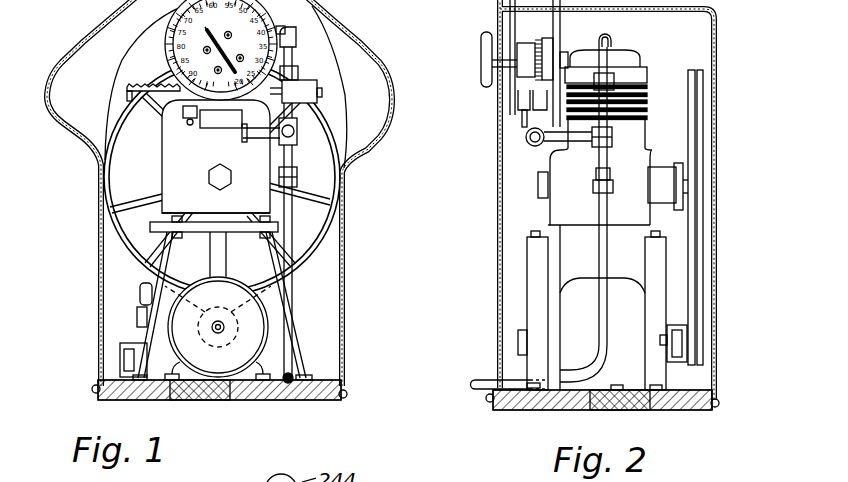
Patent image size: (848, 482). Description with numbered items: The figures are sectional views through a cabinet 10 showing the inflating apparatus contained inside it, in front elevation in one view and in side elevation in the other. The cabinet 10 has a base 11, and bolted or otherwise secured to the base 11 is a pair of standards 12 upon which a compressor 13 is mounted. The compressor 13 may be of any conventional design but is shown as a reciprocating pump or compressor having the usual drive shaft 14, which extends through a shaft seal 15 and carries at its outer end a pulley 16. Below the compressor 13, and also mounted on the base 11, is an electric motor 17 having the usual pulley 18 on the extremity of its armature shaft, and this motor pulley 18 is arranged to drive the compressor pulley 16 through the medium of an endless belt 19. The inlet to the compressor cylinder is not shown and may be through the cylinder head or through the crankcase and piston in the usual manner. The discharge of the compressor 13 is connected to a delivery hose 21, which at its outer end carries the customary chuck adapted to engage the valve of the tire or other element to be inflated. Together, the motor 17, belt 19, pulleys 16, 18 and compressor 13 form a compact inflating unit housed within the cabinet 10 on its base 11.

In FIG. 1, the cabinet 10 is at (100, 236).
In FIG. 2, the cabinet 10 is at (718, 112).
In FIG. 1, the base 11 is at (297, 393).
In FIG. 2, the base 11 is at (687, 405).
In FIG. 1, the standards 12 is at (300, 358).
In FIG. 2, the standards 12 is at (537, 285).
In FIG. 1, the compressor 13 is at (250, 195).
In FIG. 2, the drive shaft 14 is at (686, 158).
In FIG. 2, the shaft seal 15 is at (660, 193).
In FIG. 1, the pulley 16 is at (307, 127).
In FIG. 1, the electric motor 17 is at (233, 360).
In FIG. 2, the pulley 18 is at (680, 345).
In FIG. 2, the endless belt 19 is at (700, 308).
In FIG. 1, the delivery hose 21 is at (288, 278).
In FIG. 2, the delivery hose 21 is at (607, 57).